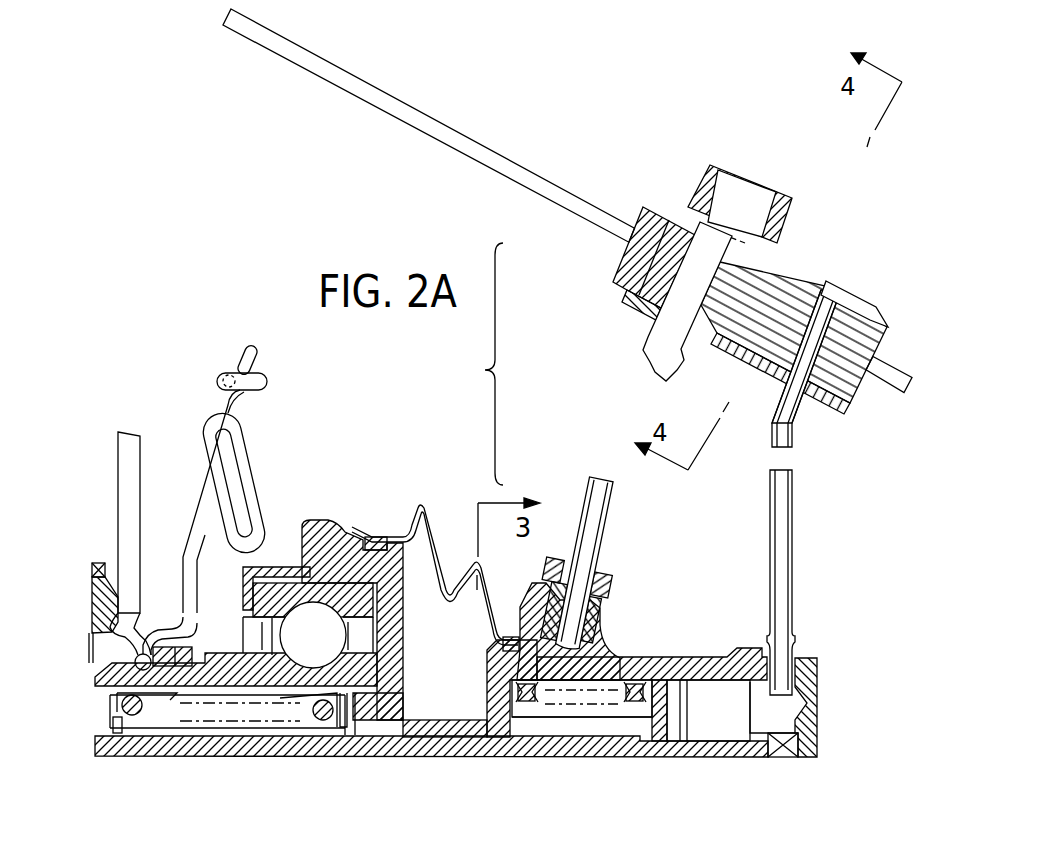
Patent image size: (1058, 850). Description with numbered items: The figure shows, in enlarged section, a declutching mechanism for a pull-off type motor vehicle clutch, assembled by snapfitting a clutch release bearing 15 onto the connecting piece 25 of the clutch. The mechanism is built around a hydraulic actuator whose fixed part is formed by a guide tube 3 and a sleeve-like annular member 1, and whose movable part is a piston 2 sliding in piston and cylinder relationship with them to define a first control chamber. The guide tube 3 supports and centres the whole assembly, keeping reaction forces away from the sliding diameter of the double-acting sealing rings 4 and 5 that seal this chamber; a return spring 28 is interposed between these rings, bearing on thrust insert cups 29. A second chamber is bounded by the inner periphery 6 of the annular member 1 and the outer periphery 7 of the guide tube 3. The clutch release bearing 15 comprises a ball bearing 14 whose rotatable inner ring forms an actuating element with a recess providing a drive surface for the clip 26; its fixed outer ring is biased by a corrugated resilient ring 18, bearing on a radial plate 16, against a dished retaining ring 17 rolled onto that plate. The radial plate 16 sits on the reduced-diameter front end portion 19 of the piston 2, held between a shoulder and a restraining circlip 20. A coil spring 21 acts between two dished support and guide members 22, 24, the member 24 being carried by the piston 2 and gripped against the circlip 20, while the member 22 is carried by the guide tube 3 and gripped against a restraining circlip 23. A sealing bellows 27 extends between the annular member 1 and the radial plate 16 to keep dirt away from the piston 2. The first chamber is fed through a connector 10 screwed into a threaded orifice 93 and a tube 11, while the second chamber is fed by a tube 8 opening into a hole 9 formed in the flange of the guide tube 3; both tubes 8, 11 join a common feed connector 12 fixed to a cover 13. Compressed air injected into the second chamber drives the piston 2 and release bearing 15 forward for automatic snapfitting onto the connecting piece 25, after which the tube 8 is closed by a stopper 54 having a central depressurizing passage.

The annular member 1 is at (676, 652).
The piston 2 is at (563, 733).
The guide tube 3 is at (730, 753).
The sealing ring 4 is at (588, 720).
The sealing ring 5 is at (527, 720).
The inner periphery 6 is at (722, 680).
The outer periphery 7 is at (683, 738).
The tube 8 is at (796, 492).
The hole 9 is at (785, 713).
The connector 10 is at (597, 573).
The tube 11 is at (598, 486).
The common feed connector 12 is at (803, 288).
The cover 13 is at (553, 185).
The ball bearing 14 is at (315, 602).
The clutch release bearing 15 is at (208, 686).
The radial plate 16 is at (408, 686).
The dished retaining ring 17 is at (322, 520).
The resilient ring 18 is at (372, 600).
The front end portion 19 is at (348, 722).
The restraining circlip 20 is at (392, 686).
The spring 21 is at (160, 712).
The support and guide member 22 is at (117, 706).
The restraining circlip 23 is at (110, 727).
The support and guide member 24 is at (297, 725).
The connecting piece 25 is at (100, 572).
The clip 26 is at (222, 440).
The sealing bellows 27 is at (430, 505).
The return spring 28 is at (612, 675).
The thrust insert cups 29 is at (648, 722).
The stopper 54 is at (868, 305).
The threaded orifice 93 is at (590, 598).